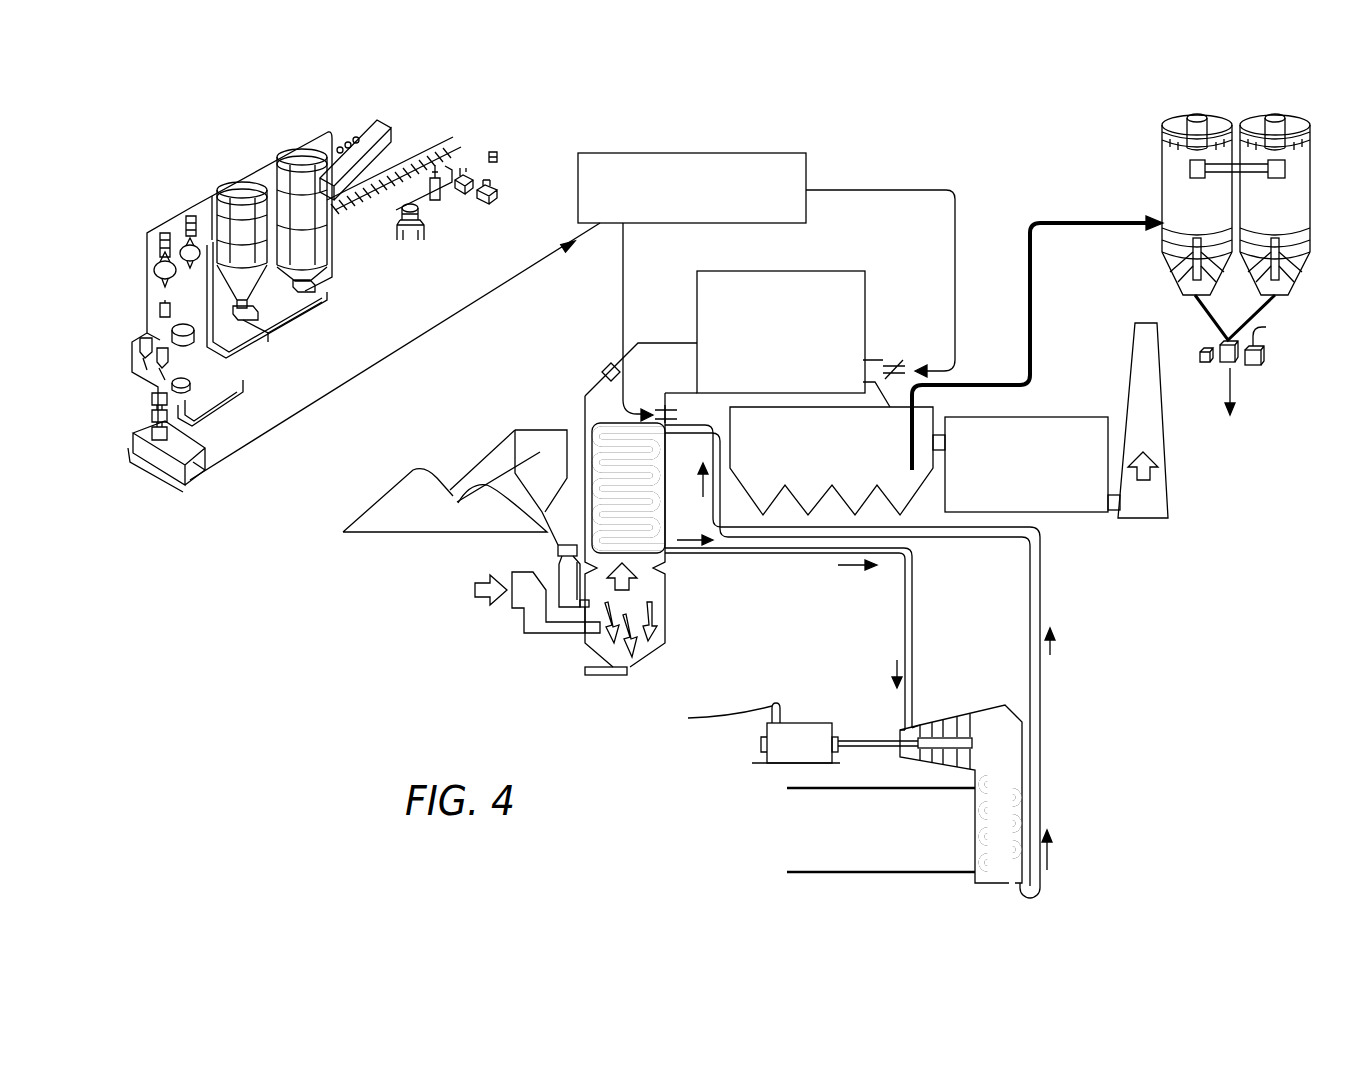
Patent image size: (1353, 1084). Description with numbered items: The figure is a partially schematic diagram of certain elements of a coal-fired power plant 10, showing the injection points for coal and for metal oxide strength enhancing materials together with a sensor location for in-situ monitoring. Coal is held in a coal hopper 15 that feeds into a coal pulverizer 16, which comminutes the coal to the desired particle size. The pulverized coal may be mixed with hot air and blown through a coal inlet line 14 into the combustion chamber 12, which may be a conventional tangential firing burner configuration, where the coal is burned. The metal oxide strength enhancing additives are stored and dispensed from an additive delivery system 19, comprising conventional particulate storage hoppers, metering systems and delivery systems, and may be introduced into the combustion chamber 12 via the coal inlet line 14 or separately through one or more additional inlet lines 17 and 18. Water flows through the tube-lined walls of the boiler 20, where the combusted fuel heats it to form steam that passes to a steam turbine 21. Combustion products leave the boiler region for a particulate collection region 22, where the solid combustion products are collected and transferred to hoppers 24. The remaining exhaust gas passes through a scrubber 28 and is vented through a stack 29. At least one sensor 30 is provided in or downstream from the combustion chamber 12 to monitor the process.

The coal-fired power plant 10 is at (330, 645).
The combustion chamber 12 is at (655, 600).
The coal inlet line 14 is at (582, 608).
The coal hopper 15 is at (525, 463).
The coal pulverizer 16 is at (560, 578).
The additional inlet line 17 is at (623, 300).
The additional inlet line 18 is at (938, 366).
The additive delivery system 19 is at (525, 140).
The boiler 20 is at (655, 466).
The steam turbine 21 is at (1010, 766).
The particulate collection region 22 is at (808, 516).
The hoppers 24 is at (1175, 165).
The scrubber 28 is at (1062, 418).
The stack 29 is at (1160, 494).
The sensor 30 is at (603, 368).